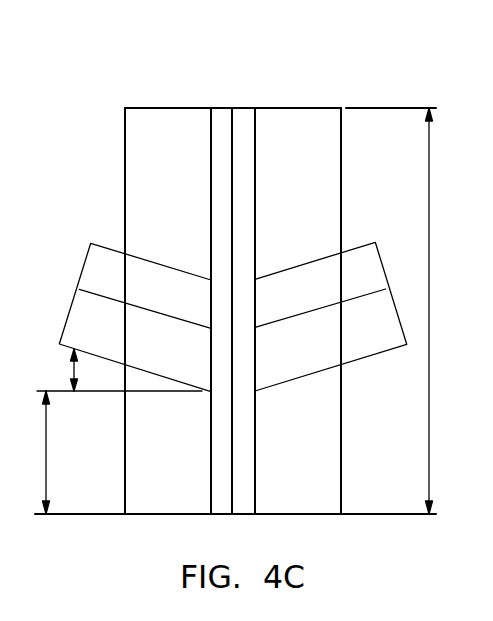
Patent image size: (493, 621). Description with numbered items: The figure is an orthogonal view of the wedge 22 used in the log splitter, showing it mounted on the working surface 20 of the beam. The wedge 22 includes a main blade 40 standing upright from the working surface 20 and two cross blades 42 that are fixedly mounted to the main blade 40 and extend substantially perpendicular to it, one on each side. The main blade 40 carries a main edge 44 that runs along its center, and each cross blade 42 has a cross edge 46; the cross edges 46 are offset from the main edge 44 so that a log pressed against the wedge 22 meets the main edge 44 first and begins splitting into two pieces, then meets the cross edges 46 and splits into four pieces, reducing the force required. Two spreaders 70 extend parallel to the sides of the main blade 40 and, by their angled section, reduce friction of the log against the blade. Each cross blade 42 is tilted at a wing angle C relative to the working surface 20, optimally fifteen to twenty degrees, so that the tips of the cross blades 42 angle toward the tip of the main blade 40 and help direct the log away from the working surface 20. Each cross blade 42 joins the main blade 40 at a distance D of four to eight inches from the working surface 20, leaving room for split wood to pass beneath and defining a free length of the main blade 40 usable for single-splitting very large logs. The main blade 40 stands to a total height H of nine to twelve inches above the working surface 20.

The wedge 22 is at (185, 58).
The spreaders 70 is at (142, 124).
The main blade 40 is at (223, 108).
The main edge 44 is at (233, 185).
The cross blades 42 is at (150, 260).
The cross edge 46 is at (97, 356).
The working surface 20 is at (108, 514).
The height H is at (428, 415).
The wing angle C is at (68, 367).
The distance D is at (48, 460).